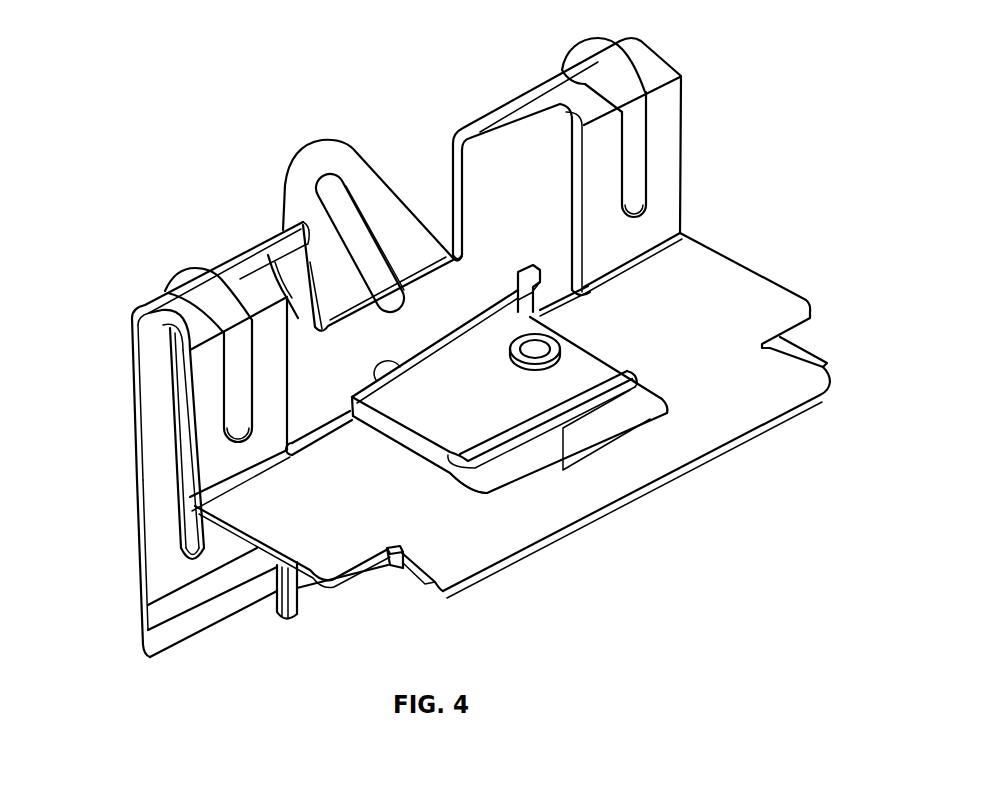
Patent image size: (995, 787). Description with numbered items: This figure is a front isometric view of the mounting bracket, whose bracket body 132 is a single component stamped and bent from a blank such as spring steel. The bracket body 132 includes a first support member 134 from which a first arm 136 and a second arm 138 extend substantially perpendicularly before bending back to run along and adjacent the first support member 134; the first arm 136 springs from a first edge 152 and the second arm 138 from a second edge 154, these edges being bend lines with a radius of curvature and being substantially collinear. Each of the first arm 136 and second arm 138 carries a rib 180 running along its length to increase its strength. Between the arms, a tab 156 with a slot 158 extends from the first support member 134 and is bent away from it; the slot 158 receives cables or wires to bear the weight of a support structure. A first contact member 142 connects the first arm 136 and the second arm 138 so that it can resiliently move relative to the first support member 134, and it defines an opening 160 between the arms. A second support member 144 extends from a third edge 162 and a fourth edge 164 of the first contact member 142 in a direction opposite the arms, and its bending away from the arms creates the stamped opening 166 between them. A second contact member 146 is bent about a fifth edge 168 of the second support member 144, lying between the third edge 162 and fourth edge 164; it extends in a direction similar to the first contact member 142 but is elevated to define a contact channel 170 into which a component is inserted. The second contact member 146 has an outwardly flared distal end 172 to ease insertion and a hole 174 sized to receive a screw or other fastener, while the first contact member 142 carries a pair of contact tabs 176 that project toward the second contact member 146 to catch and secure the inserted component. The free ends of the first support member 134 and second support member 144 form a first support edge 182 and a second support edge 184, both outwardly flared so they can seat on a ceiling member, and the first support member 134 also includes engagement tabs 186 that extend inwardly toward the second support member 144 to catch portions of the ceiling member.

The bracket body 132 is at (150, 352).
The first support member 134 is at (153, 562).
The first arm 136 is at (210, 462).
The second arm 138 is at (672, 128).
The first contact member 142 is at (487, 560).
The second support member 144 is at (297, 597).
The second contact member 146 is at (450, 420).
The first edge 152 is at (157, 301).
The second edge 154 is at (628, 45).
The tab 156 is at (290, 185).
The slot 158 is at (343, 181).
The opening 160 is at (670, 416).
The third edge 162 is at (325, 427).
The fourth edge 164 is at (562, 290).
The stamped opening 166 is at (498, 132).
The fifth edge 168 is at (425, 352).
The contact channel 170 is at (508, 500).
The outwardly flared distal end 172 is at (630, 364).
The hole 174 is at (558, 348).
The contact tabs 176 is at (404, 567).
The rib 180 is at (574, 58).
The first support edge 182 is at (210, 628).
The second support edge 184 is at (349, 592).
The engagement tabs 186 is at (516, 300).